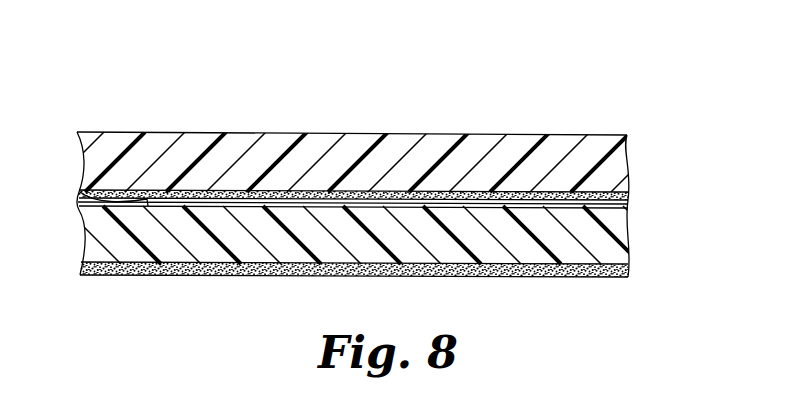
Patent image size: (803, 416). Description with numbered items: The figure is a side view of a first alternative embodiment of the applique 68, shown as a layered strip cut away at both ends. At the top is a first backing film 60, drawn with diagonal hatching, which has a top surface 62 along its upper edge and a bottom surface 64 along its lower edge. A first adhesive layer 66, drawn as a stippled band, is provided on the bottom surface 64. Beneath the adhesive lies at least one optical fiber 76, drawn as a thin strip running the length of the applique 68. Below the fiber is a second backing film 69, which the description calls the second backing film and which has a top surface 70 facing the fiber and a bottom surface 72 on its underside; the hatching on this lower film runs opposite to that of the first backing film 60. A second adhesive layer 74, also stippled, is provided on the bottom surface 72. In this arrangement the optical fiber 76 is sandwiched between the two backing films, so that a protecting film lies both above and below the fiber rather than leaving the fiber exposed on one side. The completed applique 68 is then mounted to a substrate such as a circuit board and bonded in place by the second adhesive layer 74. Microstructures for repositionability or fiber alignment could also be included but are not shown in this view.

The applique 68 is at (624, 102).
The first backing film 60 is at (525, 143).
The top surface 62 is at (285, 132).
The bottom surface 64 is at (80, 193).
The top surface 70 is at (105, 203).
The first adhesive layer 66 is at (624, 196).
The optical fiber 76 is at (628, 205).
The lower substrate layer 69 is at (607, 253).
The bottom surface 72 is at (142, 268).
The second adhesive layer 74 is at (405, 272).